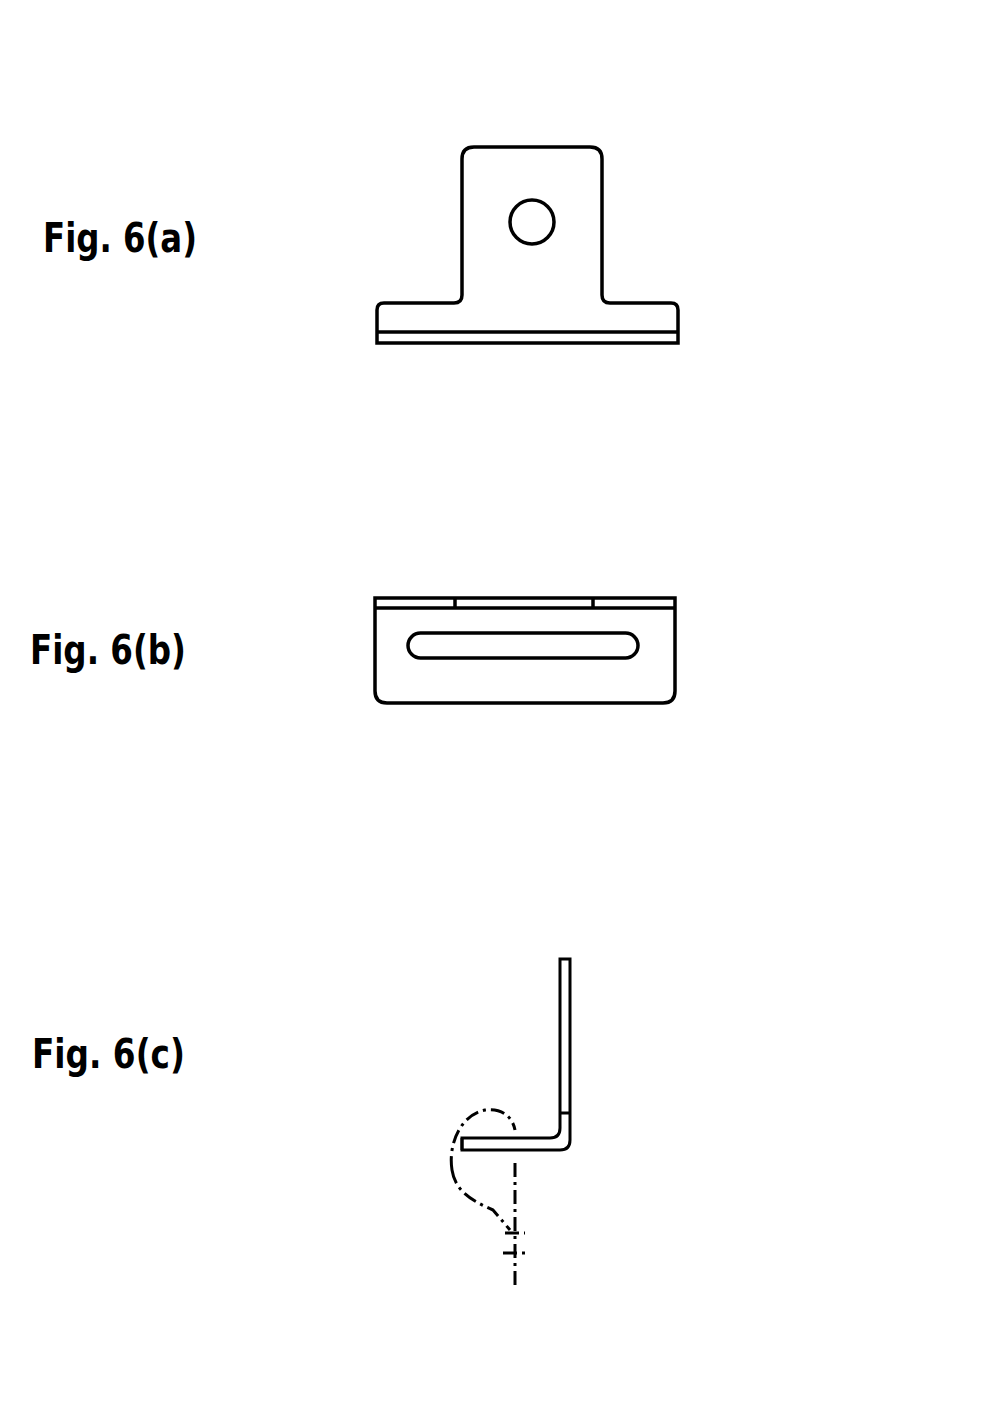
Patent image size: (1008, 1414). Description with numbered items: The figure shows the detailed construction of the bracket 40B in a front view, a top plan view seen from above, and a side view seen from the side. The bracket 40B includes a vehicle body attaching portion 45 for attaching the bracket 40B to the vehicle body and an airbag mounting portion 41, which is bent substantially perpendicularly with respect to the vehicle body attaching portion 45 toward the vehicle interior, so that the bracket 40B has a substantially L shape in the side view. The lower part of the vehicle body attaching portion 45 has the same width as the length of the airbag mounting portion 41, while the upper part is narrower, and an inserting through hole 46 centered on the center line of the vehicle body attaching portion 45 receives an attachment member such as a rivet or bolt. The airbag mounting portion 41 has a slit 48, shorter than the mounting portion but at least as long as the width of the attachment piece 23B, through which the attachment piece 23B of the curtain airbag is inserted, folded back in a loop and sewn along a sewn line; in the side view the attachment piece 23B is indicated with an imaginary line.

In FIG. 6A, the bracket 40B is at (758, 101).
In FIG. 6B, the bracket 40B is at (751, 551).
In FIG. 6C, the bracket 40B is at (717, 1023).
In FIG. 6A, the airbag mounting portion 41 is at (393, 334).
In FIG. 6B, the airbag mounting portion 41 is at (397, 678).
In FIG. 6C, the airbag mounting portion 41 is at (455, 1145).
In FIG. 6A, the vehicle body attaching portion 45 is at (482, 183).
In FIG. 6B, the vehicle body attaching portion 45 is at (477, 600).
In FIG. 6C, the vehicle body attaching portion 45 is at (560, 1004).
In FIG. 6A, the inserting through hole 46 is at (533, 202).
In FIG. 6B, the slit 48 is at (607, 638).
In FIG. 6C, the attachment piece 23B is at (520, 1170).